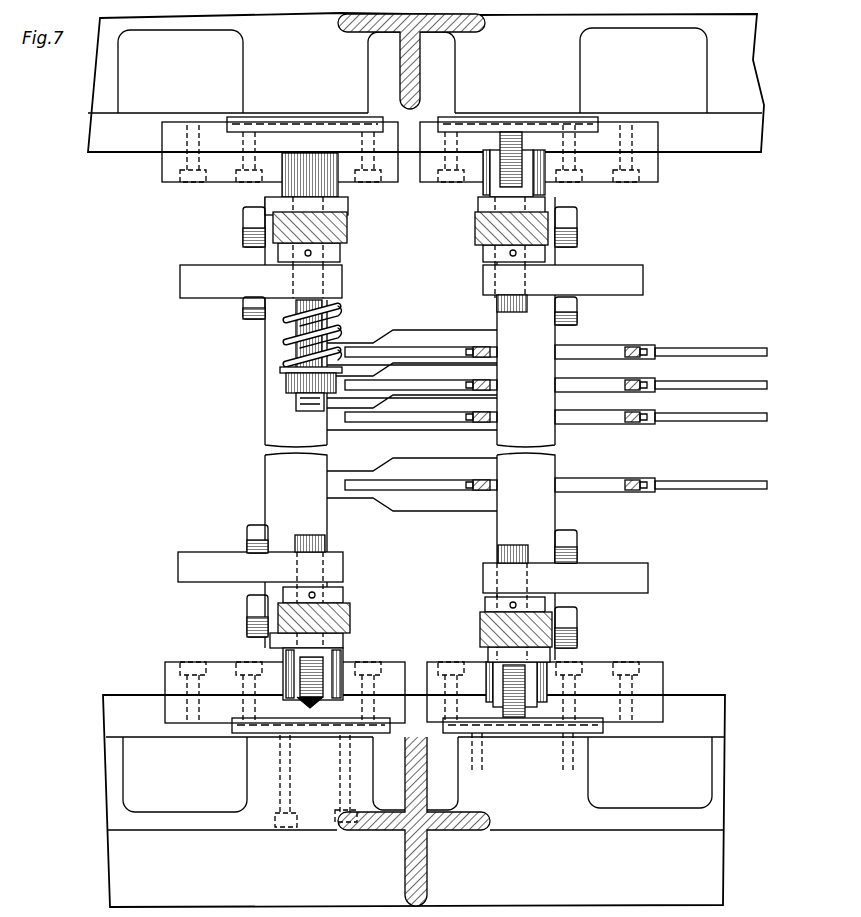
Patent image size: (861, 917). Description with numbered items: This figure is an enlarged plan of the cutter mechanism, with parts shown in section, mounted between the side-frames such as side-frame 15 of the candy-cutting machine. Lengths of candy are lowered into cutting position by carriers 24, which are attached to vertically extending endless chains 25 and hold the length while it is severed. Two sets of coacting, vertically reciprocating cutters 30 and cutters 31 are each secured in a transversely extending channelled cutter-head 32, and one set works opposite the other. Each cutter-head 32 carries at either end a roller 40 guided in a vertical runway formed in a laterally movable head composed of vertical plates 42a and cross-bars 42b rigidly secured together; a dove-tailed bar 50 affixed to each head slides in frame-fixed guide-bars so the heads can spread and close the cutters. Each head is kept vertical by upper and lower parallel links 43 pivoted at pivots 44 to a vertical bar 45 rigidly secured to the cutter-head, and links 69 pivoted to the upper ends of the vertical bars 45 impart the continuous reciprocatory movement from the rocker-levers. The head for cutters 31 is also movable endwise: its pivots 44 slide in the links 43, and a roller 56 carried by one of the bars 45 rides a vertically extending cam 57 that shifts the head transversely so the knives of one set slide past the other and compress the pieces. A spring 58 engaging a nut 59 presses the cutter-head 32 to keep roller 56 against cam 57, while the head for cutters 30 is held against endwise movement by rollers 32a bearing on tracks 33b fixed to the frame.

The side-frame 15 is at (426, 82).
The carrier 24 is at (722, 348).
The endless chain 25 is at (570, 348).
The cutter 30 is at (458, 340).
The cutter 31 is at (372, 343).
The cutter-head 32 is at (410, 428).
The roller 32a is at (511, 145).
The track 33b is at (475, 132).
The roller 40 is at (340, 182).
The vertical plate 42a is at (226, 180).
The cross-bar 42b is at (176, 143).
The parallel link 43 is at (232, 275).
The pivot 44 is at (500, 310).
The vertical bar 45 is at (340, 252).
The dove-tailed bar 50 is at (145, 124).
The roller 56 is at (300, 670).
The cam 57 is at (308, 710).
The spring 58 is at (340, 318).
The nut 59 is at (284, 380).
The link 69 is at (347, 228).